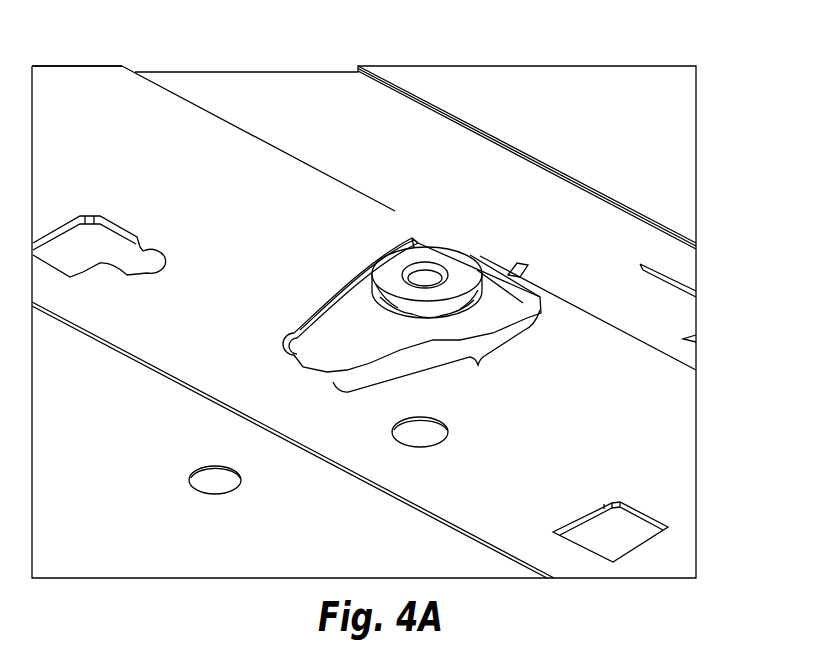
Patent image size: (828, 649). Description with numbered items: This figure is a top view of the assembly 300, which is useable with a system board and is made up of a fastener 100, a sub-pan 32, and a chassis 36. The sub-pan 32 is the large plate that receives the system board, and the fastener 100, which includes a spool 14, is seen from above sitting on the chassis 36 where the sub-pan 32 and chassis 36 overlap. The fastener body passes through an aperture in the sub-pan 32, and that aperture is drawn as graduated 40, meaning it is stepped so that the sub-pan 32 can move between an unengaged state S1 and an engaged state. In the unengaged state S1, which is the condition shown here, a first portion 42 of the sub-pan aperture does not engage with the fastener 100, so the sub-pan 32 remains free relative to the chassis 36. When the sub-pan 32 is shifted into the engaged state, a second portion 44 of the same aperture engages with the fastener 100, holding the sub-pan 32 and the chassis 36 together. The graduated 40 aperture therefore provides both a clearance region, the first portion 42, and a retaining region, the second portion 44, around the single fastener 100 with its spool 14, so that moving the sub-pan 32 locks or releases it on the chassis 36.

The assembly 300 is at (245, 70).
The fastener 100 is at (448, 267).
The spool 14 is at (467, 272).
The first portion of the sub-pan aperture 42 is at (545, 297).
The chassis 36 is at (332, 335).
The second portion of the sub-pan aperture 44 is at (280, 338).
The graduated 40 is at (436, 353).
The sub-pan 32 is at (660, 437).
The unengaged state S1 is at (383, 263).